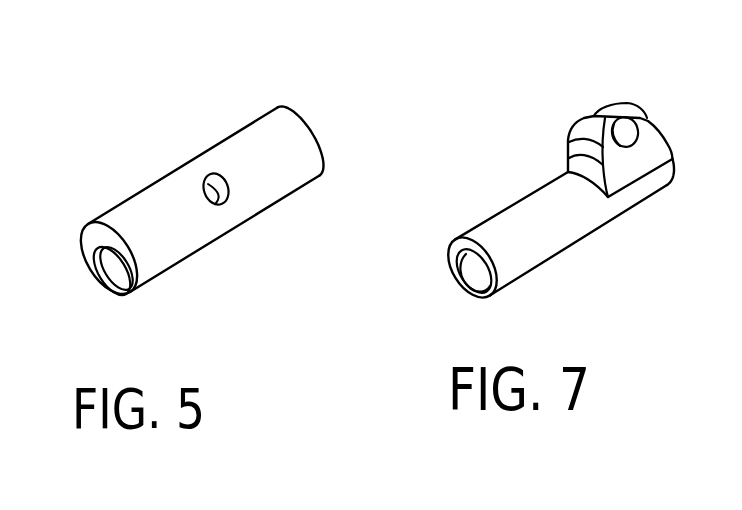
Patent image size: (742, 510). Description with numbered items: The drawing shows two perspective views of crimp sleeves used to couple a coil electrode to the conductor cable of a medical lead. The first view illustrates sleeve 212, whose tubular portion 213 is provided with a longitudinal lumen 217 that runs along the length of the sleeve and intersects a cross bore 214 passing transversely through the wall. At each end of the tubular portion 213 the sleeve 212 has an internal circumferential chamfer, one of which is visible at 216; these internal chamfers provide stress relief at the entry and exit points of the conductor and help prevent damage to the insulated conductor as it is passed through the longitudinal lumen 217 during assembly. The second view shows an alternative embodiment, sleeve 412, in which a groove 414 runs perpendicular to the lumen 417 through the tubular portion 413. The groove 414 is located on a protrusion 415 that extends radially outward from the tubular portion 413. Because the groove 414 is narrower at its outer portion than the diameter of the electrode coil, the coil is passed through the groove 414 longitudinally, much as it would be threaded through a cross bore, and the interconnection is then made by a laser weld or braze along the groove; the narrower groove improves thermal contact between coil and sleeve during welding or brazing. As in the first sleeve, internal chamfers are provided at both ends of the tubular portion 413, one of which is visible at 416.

In FIG. 5, the sleeve 212 is at (155, 183).
In FIG. 5, the tubular portion 213 is at (282, 128).
In FIG. 5, the cross bore 214 is at (228, 199).
In FIG. 5, the internal circumferential chamfer 216 is at (98, 273).
In FIG. 5, the longitudinal lumen 217 is at (117, 272).
In FIG. 7, the sleeve 412 is at (488, 221).
In FIG. 7, the tubular portion 413 is at (540, 207).
In FIG. 7, the groove 414 is at (627, 133).
In FIG. 7, the protrusion 415 is at (648, 152).
In FIG. 7, the internal chamfer 416 is at (468, 277).
In FIG. 7, the lumen 417 is at (481, 270).